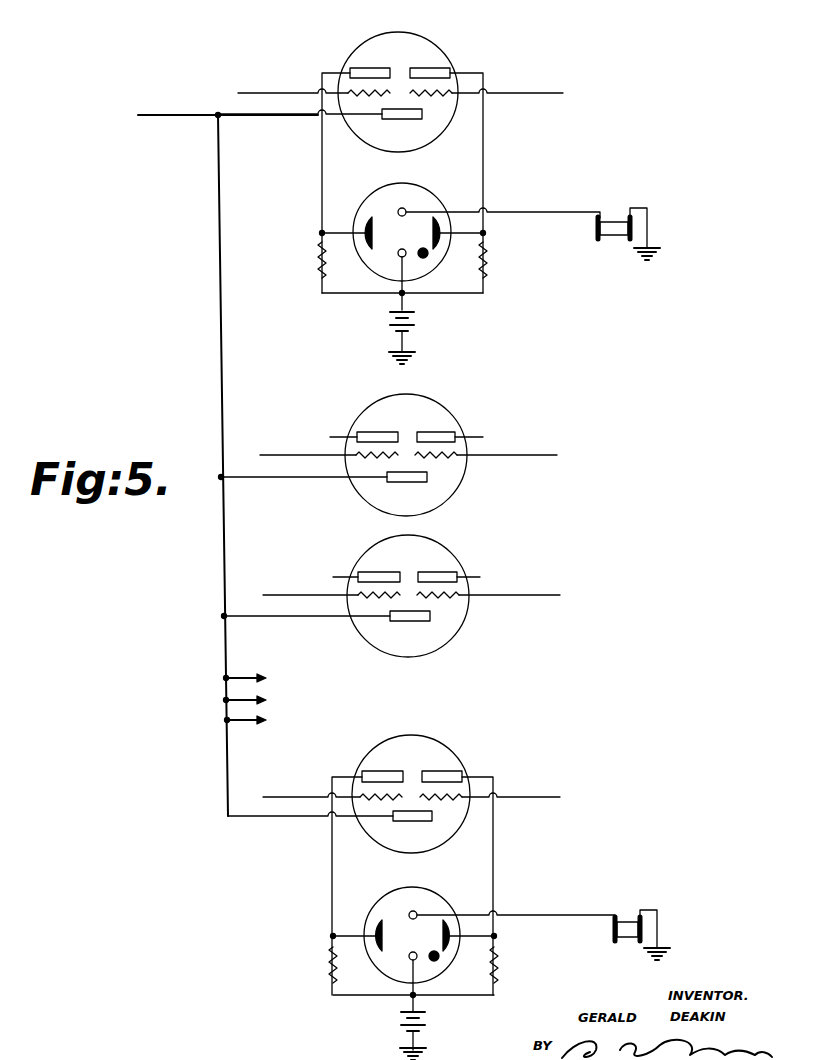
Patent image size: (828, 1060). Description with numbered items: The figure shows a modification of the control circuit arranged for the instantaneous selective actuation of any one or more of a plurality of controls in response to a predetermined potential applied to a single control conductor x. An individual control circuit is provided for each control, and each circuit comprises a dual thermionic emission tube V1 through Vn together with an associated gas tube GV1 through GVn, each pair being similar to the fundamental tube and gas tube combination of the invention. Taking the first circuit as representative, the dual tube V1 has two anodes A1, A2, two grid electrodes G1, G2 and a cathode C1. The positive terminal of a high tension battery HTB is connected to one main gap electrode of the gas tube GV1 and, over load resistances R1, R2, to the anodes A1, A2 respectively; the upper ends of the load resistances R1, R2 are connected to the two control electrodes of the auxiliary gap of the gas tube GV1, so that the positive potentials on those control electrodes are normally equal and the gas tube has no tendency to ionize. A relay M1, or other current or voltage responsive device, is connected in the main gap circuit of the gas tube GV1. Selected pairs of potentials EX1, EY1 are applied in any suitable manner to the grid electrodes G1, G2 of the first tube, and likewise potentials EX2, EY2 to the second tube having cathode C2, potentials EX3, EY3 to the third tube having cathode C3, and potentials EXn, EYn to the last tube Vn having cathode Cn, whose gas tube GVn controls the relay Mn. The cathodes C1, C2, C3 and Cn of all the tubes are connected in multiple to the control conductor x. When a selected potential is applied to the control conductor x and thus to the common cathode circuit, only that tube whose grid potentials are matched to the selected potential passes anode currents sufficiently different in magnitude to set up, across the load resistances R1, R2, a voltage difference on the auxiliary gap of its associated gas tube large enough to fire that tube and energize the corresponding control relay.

The control conductor x is at (217, 462).
The dual thermionic emission tube V1 is at (402, 148).
The anode A1 is at (369, 68).
The anode A2 is at (428, 68).
The grid electrode G1 is at (365, 97).
The grid electrode G2 is at (437, 97).
The cathode C1 is at (396, 119).
The grid potential EX1 is at (293, 84).
The grid potential EY1 is at (510, 83).
The gas tube GV1 is at (374, 258).
The load resistance R1 is at (316, 612).
The load resistance R2 is at (502, 612).
The high tension battery HTB is at (426, 686).
The relay M1 is at (612, 226).
The grid potential EX2 is at (371, 455).
The grid potential EY2 is at (507, 446).
The cathode C2 is at (401, 483).
The grid potential EX3 is at (371, 596).
The grid potential EY3 is at (509, 586).
The cathode C3 is at (402, 622).
The dual thermionic emission tube Vn is at (412, 853).
The grid potential EXn is at (362, 789).
The grid potential EYn is at (511, 788).
The cathode Cn is at (406, 822).
The gas tube GVn is at (391, 960).
The relay Mn is at (626, 928).